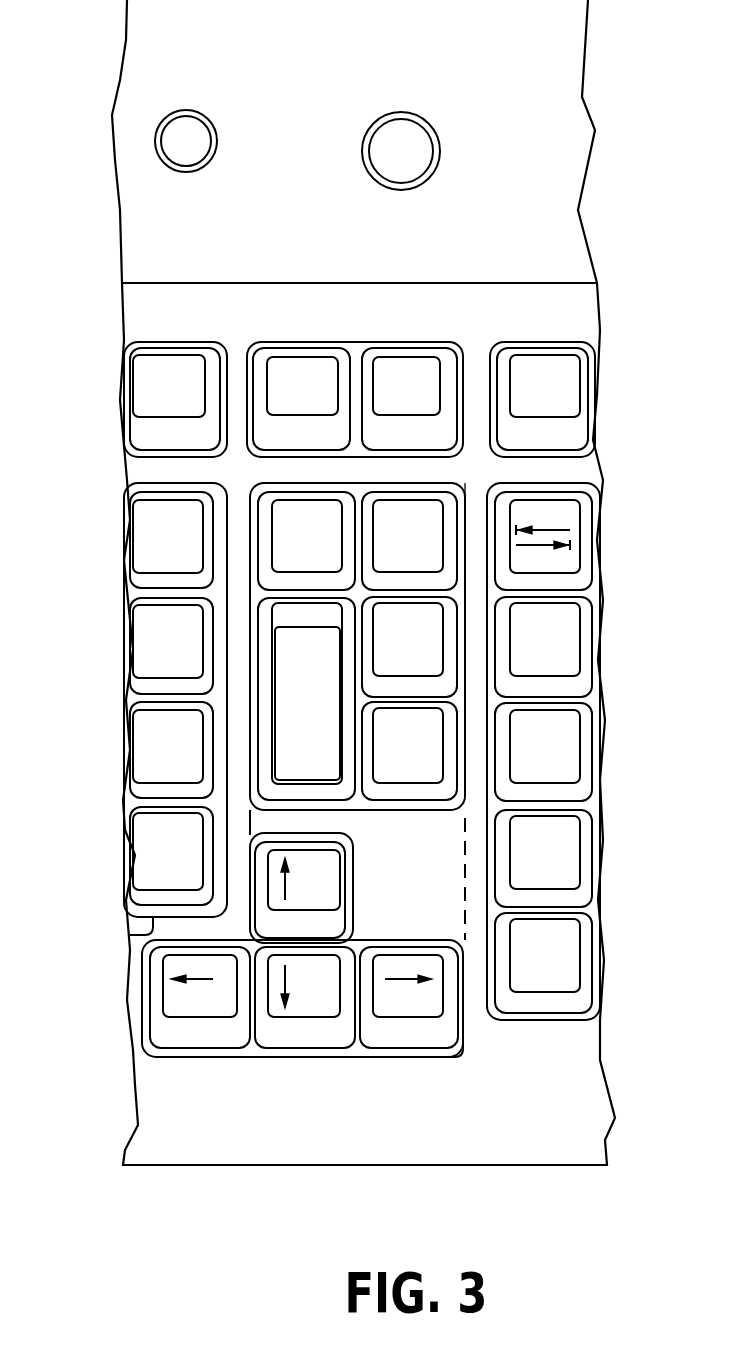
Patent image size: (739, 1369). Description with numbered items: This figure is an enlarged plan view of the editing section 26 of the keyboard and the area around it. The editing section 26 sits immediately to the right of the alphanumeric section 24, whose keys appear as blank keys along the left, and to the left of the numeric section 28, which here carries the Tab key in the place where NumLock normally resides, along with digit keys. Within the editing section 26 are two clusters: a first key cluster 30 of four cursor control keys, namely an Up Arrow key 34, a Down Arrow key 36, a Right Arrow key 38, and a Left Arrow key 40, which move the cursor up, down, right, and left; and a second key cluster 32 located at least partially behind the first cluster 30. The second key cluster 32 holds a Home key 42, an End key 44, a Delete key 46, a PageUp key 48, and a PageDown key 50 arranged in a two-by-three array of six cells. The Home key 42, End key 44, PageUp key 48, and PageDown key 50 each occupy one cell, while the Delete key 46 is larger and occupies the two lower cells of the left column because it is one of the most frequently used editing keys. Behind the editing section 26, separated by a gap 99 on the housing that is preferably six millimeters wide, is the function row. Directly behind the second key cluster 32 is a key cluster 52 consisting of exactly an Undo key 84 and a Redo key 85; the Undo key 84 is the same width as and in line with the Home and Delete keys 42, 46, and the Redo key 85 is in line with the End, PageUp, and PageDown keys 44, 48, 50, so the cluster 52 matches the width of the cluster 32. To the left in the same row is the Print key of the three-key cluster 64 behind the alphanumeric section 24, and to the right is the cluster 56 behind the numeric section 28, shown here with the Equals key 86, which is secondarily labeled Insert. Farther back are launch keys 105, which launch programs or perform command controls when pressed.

The launch keys 105 is at (205, 137).
The key cluster 64 is at (180, 344).
The key cluster 52 is at (360, 376).
The Undo key 84 is at (321, 410).
The Redo key 85 is at (425, 410).
The key cluster 56 is at (542, 376).
The Equals key 86 is at (567, 400).
The gap 99 is at (458, 455).
The alphanumeric section 24 is at (135, 933).
The second key cluster 32 is at (357, 711).
The Home key 42 is at (326, 561).
The End key 44 is at (427, 561).
The Delete key 46 is at (326, 710).
The PageUp key 48 is at (439, 670).
The PageDown key 50 is at (426, 777).
The numeric section 28 is at (552, 1022).
The editing section 26 is at (302, 970).
The Up Arrow key 34 is at (332, 896).
The Down Arrow key 36 is at (332, 1010).
The Right Arrow key 38 is at (395, 1016).
The Left Arrow key 40 is at (182, 1016).
The first key cluster 30 is at (450, 1057).